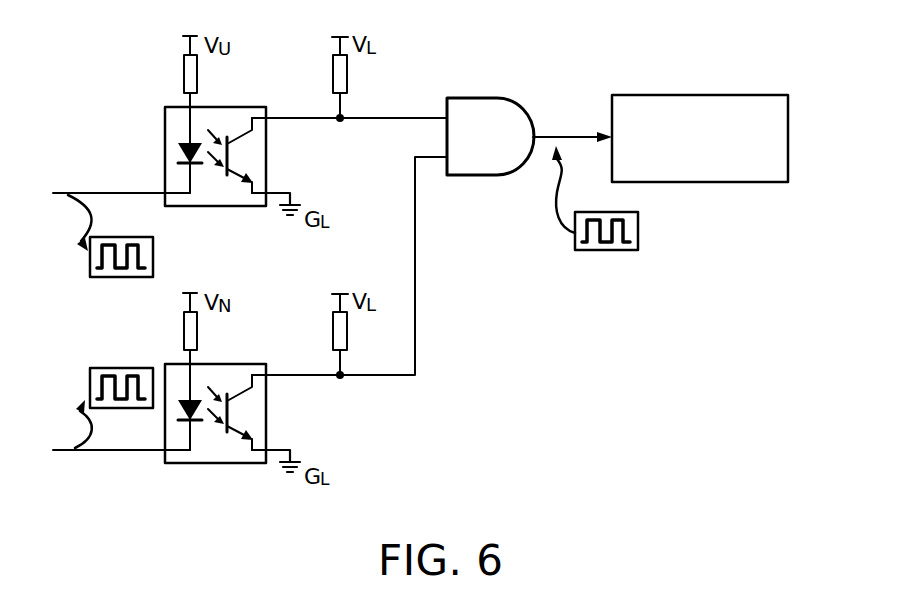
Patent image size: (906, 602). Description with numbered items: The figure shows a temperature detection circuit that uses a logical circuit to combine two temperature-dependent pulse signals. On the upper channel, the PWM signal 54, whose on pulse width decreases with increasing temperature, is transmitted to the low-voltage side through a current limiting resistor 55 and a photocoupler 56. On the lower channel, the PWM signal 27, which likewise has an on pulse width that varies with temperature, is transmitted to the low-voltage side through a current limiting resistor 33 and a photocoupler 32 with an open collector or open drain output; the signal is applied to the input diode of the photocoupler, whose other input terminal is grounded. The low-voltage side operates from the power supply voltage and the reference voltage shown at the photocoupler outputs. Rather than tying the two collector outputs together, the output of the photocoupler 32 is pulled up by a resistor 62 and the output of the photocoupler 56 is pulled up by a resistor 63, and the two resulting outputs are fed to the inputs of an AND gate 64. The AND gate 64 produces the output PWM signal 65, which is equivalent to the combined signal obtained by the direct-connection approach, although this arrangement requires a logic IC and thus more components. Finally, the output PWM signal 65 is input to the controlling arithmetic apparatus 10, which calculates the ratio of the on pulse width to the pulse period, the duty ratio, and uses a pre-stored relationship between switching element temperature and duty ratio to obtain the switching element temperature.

The controlling arithmetic apparatus 10 is at (733, 182).
The PWM signal 27 is at (144, 367).
The photocoupler 32 is at (187, 463).
The current limiting resistor 33 is at (197, 335).
The PWM signal 54 is at (102, 277).
The current limiting resistor 55 is at (197, 78).
The photocoupler 56 is at (187, 206).
The resistor 62 is at (347, 335).
The resistor 63 is at (347, 78).
The AND gate 64 is at (478, 98).
The output PWM signal 65 is at (595, 250).